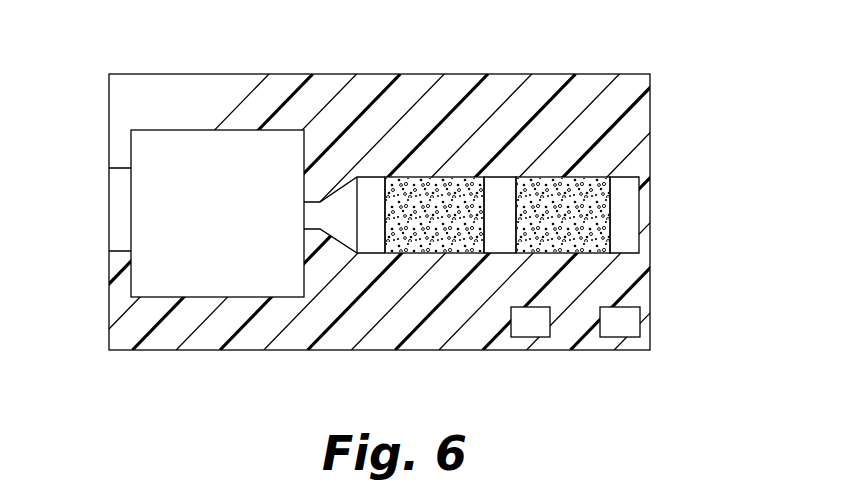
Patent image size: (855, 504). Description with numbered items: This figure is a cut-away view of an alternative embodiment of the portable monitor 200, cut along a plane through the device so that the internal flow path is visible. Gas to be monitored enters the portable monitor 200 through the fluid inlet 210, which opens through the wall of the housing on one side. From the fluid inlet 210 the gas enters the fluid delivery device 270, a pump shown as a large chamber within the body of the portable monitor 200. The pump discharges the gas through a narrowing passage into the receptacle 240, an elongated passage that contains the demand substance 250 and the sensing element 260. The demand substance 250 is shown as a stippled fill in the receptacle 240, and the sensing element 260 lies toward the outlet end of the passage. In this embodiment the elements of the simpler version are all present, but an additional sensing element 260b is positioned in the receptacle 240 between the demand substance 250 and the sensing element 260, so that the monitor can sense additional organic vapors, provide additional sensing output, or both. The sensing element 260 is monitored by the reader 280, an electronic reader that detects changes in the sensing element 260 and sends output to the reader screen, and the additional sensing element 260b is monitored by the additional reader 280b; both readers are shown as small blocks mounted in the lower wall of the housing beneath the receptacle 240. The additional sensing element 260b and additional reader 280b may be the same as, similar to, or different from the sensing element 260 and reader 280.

The portable monitor 200 is at (703, 48).
The fluid inlet 210 is at (118, 204).
The receptacle 240 is at (366, 193).
The demand substance 250 is at (430, 193).
The sensing element 260 is at (630, 220).
The additional sensing element 260b is at (498, 193).
The fluid delivery device 270 is at (238, 211).
The reader 280 is at (623, 325).
The additional reader 280b is at (533, 325).